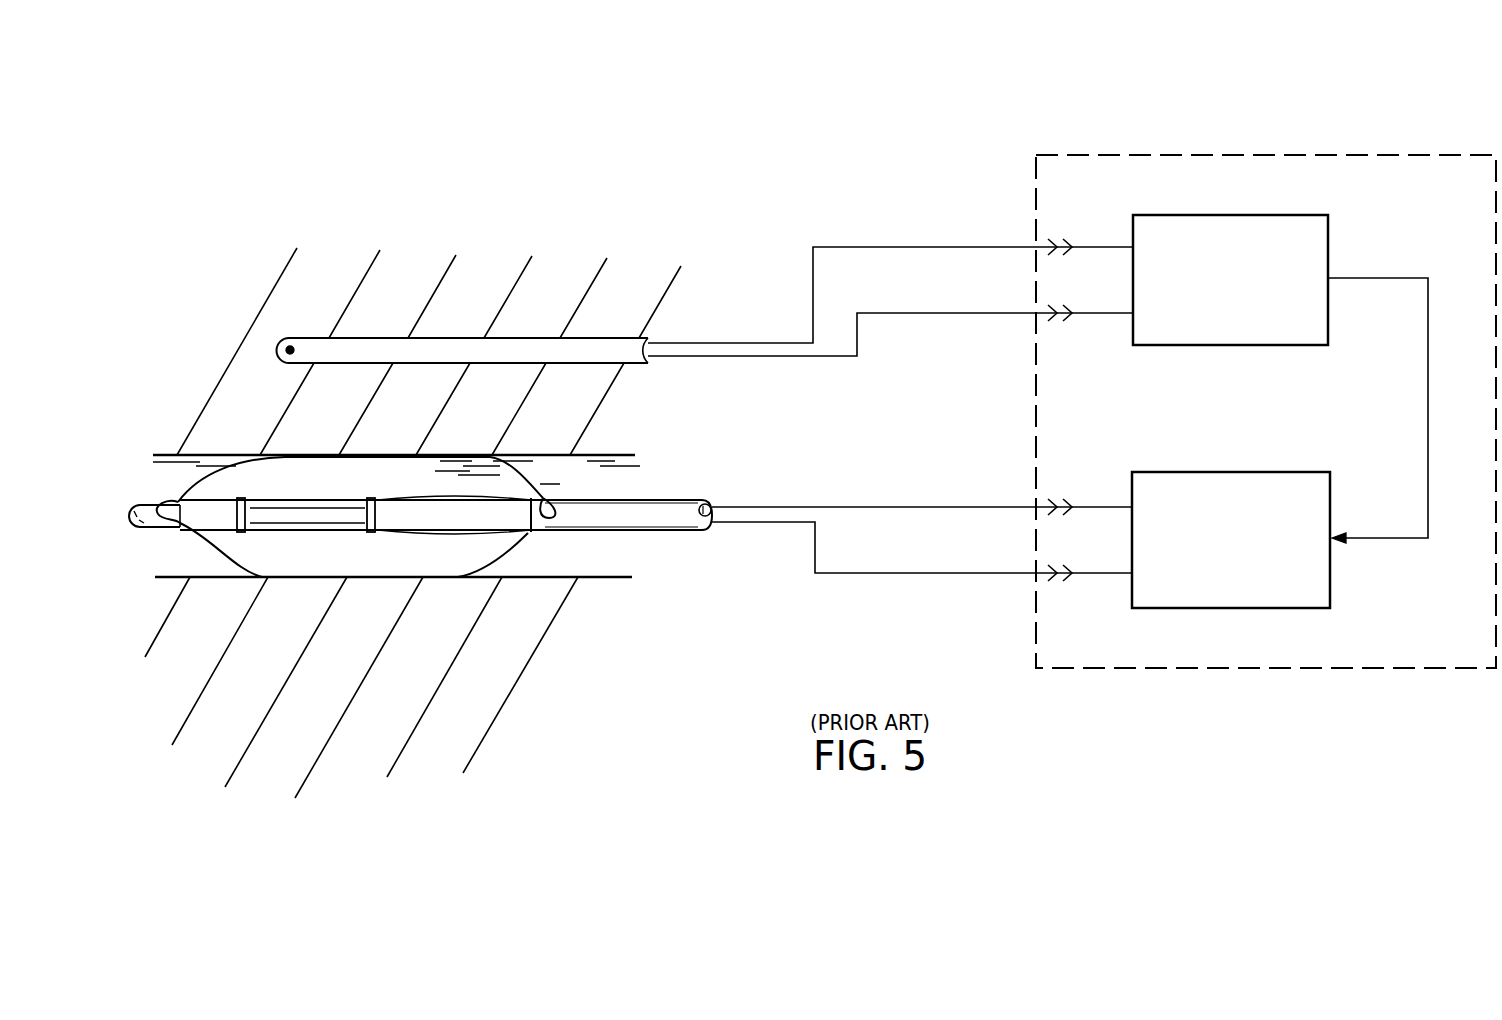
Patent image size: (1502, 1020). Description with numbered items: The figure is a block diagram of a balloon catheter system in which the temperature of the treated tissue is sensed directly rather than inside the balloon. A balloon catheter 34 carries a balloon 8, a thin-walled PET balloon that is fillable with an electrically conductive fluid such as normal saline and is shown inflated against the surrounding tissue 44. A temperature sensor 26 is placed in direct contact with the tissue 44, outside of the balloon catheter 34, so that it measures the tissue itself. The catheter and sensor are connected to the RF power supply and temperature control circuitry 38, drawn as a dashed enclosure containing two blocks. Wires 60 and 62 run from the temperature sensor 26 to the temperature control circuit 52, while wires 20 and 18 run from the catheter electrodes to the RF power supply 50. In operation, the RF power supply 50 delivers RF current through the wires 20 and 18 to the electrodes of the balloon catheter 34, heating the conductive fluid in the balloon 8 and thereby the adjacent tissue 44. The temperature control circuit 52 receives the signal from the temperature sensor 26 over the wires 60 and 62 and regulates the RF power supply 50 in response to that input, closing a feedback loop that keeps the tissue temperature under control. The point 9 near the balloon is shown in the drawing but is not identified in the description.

The balloon 8 is at (404, 582).
The balloon attachment 9 is at (540, 494).
The wire 18 is at (977, 574).
The wire 20 is at (973, 506).
The temperature sensor 26 is at (437, 333).
The balloon catheter 34 is at (651, 542).
The RF power supply and temperature control circuitry 38 is at (1078, 153).
The tissue 44 is at (372, 421).
The RF power supply 50 is at (1252, 471).
The temperature control circuit 52 is at (1238, 214).
The wire 60 is at (941, 246).
The wire 62 is at (938, 314).